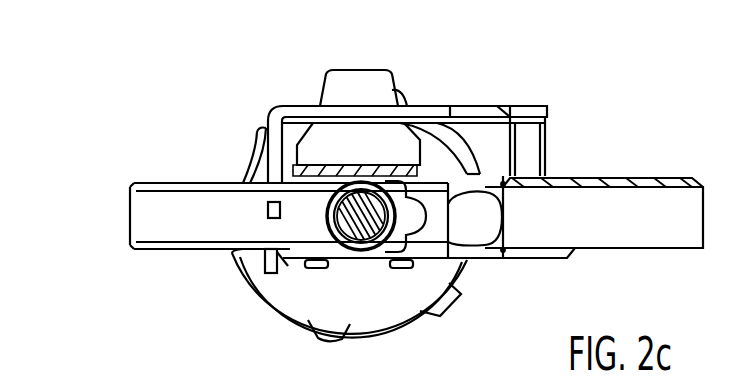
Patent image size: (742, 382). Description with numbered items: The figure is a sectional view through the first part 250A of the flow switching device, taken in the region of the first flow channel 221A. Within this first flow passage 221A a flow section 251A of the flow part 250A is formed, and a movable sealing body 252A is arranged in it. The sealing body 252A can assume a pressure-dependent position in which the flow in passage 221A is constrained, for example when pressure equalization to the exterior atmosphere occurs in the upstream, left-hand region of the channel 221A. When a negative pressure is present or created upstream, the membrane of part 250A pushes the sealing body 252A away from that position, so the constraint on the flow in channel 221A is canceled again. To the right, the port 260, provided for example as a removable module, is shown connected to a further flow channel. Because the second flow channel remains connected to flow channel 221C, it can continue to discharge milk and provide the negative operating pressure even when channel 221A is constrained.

The first part of the flow switching device 250A is at (403, 80).
The first flow channel 221A is at (226, 217).
The flow channel 221C is at (488, 226).
The movable sealing body 252A is at (347, 223).
The flow section 251A is at (366, 244).
The port 260 is at (646, 173).